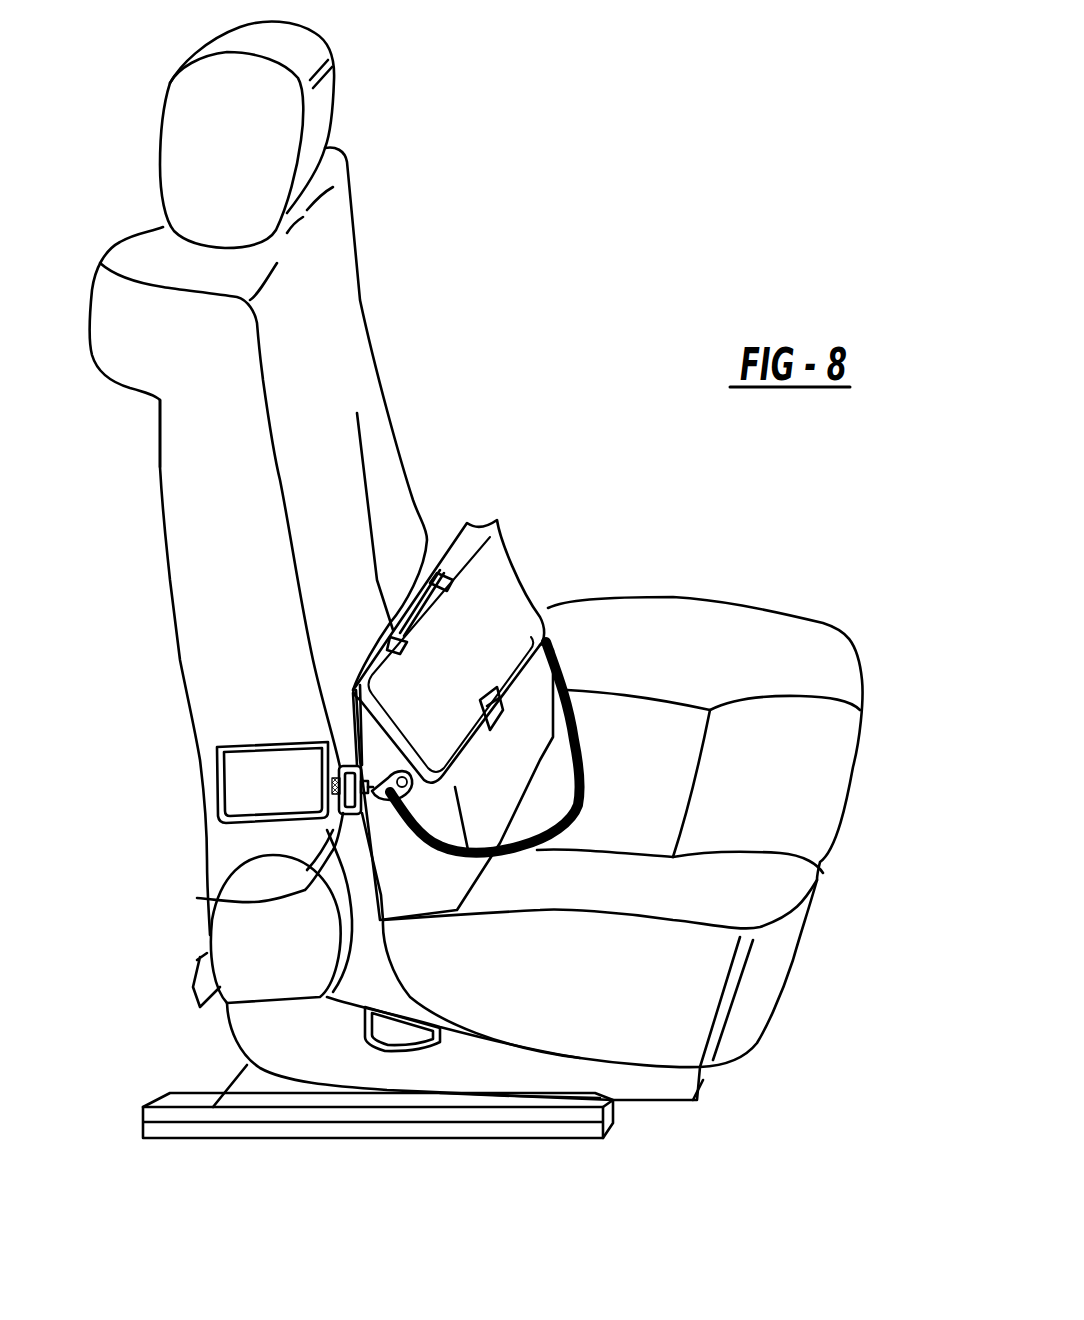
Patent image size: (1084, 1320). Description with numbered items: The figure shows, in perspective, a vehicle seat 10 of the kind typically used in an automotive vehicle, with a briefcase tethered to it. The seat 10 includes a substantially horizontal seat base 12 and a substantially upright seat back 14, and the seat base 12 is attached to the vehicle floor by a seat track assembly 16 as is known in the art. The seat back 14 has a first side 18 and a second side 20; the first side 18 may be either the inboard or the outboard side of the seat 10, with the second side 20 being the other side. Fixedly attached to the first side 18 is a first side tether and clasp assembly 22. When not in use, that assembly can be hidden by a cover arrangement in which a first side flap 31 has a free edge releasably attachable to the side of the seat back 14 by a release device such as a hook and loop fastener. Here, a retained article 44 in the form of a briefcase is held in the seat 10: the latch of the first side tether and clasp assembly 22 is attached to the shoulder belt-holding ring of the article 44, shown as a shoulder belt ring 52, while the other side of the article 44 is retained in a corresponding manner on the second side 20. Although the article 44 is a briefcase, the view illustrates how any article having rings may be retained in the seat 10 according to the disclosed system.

The seat 10 is at (484, 360).
The seat base 12 is at (820, 810).
The seat back 14 is at (208, 635).
The seat track assembly 16 is at (203, 1130).
The first side 18 is at (210, 463).
The second side 20 is at (310, 320).
The first side tether and clasp assembly 22 is at (197, 898).
The first side flap 31 is at (253, 793).
The retained article 44 is at (490, 623).
The shoulder belt ring 52 is at (390, 771).